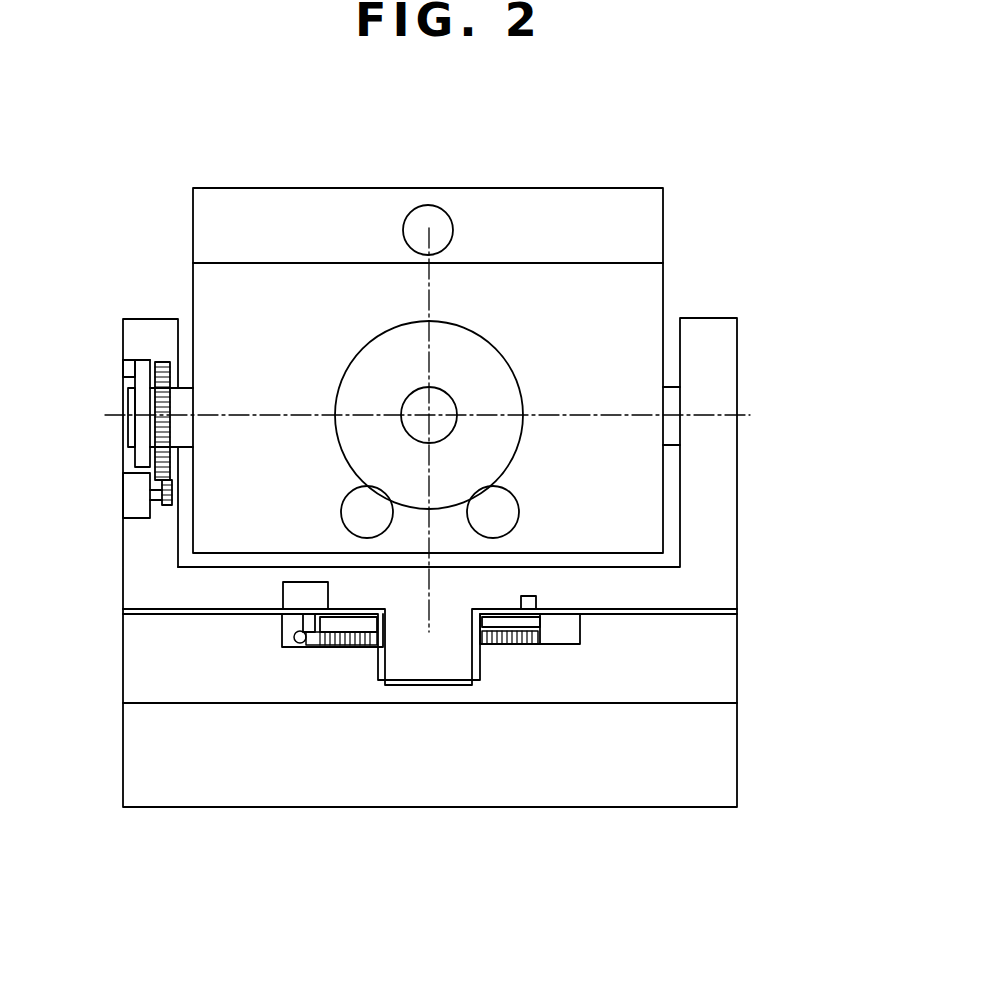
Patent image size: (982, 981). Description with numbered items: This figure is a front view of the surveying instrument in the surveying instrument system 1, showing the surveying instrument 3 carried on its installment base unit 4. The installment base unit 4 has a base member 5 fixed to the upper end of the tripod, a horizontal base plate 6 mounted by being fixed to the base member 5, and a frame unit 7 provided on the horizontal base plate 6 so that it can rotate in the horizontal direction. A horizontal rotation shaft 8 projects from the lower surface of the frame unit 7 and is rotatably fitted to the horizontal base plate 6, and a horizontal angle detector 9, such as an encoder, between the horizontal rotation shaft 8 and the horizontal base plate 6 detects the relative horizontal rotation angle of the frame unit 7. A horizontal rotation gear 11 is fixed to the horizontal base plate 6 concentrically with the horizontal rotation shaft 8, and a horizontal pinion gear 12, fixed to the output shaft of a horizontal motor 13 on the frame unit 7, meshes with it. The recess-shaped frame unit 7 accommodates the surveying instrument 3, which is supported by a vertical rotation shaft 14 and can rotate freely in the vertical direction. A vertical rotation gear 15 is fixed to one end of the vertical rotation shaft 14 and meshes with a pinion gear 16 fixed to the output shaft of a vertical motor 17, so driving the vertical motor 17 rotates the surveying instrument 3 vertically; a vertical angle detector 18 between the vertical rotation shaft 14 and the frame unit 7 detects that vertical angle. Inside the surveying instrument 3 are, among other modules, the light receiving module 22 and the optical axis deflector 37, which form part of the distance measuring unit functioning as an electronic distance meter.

The surveying instrument system 1 is at (377, 151).
The surveying instrument 3 is at (551, 188).
The installment base unit 4 is at (437, 689).
The base member 5 is at (737, 770).
The horizontal base plate 6 is at (737, 672).
The frame unit 7 is at (712, 318).
The horizontal rotation shaft 8 is at (478, 668).
The horizontal angle detector 9 is at (549, 603).
The horizontal rotation gear 11 is at (541, 637).
The horizontal pinion gear 12 is at (284, 637).
The horizontal motor 13 is at (283, 596).
The vertical rotation shaft 14 is at (669, 387).
The vertical rotation gear 15 is at (162, 362).
The pinion gear 16 is at (163, 507).
The vertical motor 17 is at (131, 520).
The vertical angle detector 18 is at (138, 355).
The light receiving module 22 is at (453, 230).
The optical axis deflector 37 is at (522, 454).